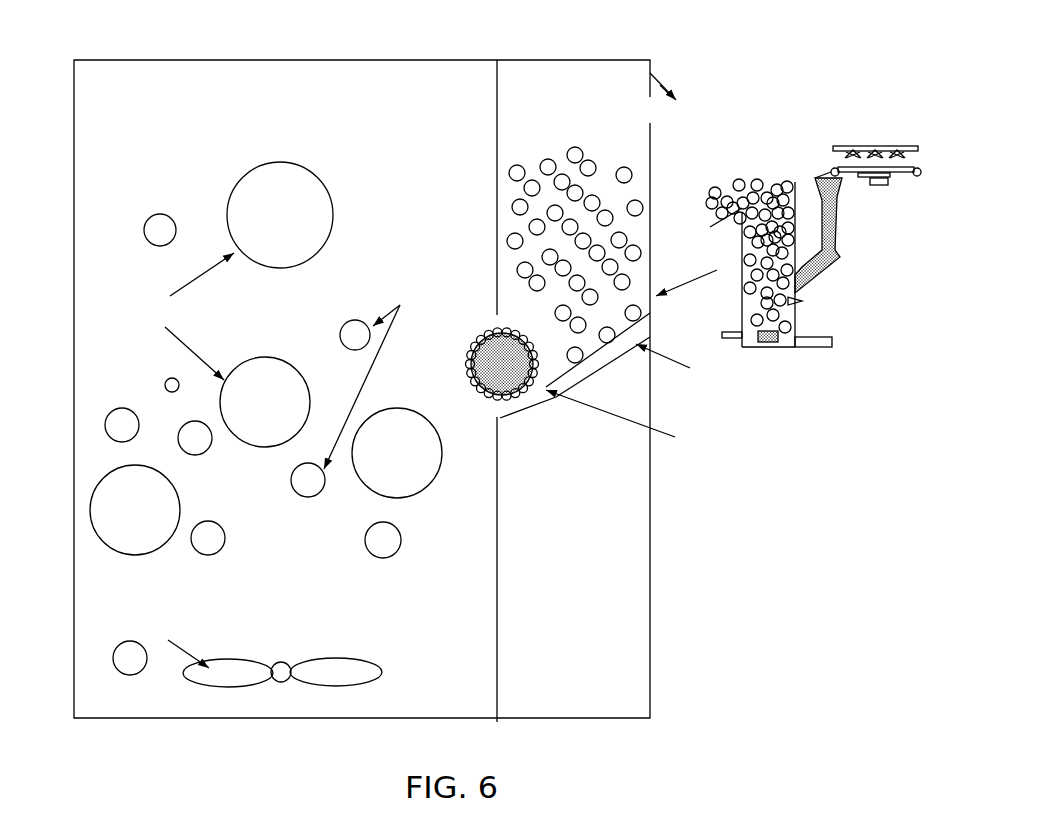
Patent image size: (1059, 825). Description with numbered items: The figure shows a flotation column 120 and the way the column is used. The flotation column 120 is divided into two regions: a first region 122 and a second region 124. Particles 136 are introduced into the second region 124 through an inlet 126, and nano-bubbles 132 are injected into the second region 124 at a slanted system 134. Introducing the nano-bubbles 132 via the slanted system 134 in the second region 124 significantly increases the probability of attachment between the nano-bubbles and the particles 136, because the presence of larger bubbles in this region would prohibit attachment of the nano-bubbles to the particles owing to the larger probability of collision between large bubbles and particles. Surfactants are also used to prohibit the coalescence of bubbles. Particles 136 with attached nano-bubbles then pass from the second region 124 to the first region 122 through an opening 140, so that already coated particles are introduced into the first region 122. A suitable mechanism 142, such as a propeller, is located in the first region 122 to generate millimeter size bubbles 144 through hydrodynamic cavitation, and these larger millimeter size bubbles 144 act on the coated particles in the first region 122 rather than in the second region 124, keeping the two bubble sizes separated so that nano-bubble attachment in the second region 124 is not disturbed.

The flotation column 120 is at (74, 307).
The region 1 122 is at (458, 113).
The region 2 124 is at (594, 96).
The inlet 126 is at (650, 132).
The nano-bubbles 132 is at (524, 188).
The slanted system 134 is at (608, 362).
The particles 136 is at (465, 359).
The opening 140 is at (498, 406).
The mechanism 142 is at (392, 665).
The millimeter size bubbles 144 is at (230, 192).